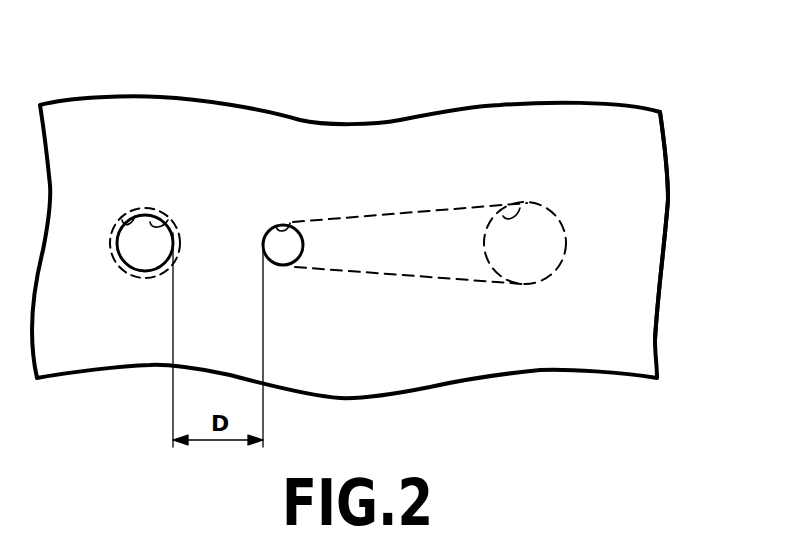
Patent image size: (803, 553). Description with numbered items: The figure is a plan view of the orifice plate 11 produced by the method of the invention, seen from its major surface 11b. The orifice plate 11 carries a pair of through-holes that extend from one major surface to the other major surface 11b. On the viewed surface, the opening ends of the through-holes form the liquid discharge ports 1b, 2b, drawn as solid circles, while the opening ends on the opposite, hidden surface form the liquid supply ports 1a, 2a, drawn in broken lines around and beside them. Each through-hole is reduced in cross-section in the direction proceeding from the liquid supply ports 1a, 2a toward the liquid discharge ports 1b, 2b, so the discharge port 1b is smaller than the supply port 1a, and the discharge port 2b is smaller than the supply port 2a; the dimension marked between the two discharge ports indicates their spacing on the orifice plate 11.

The liquid supply port 1a is at (135, 216).
The liquid discharge port 1b is at (168, 220).
The liquid supply port 2a is at (520, 208).
The liquid discharge port 2b is at (290, 223).
The orifice plate 11 is at (627, 323).
The major surface 11b is at (643, 192).